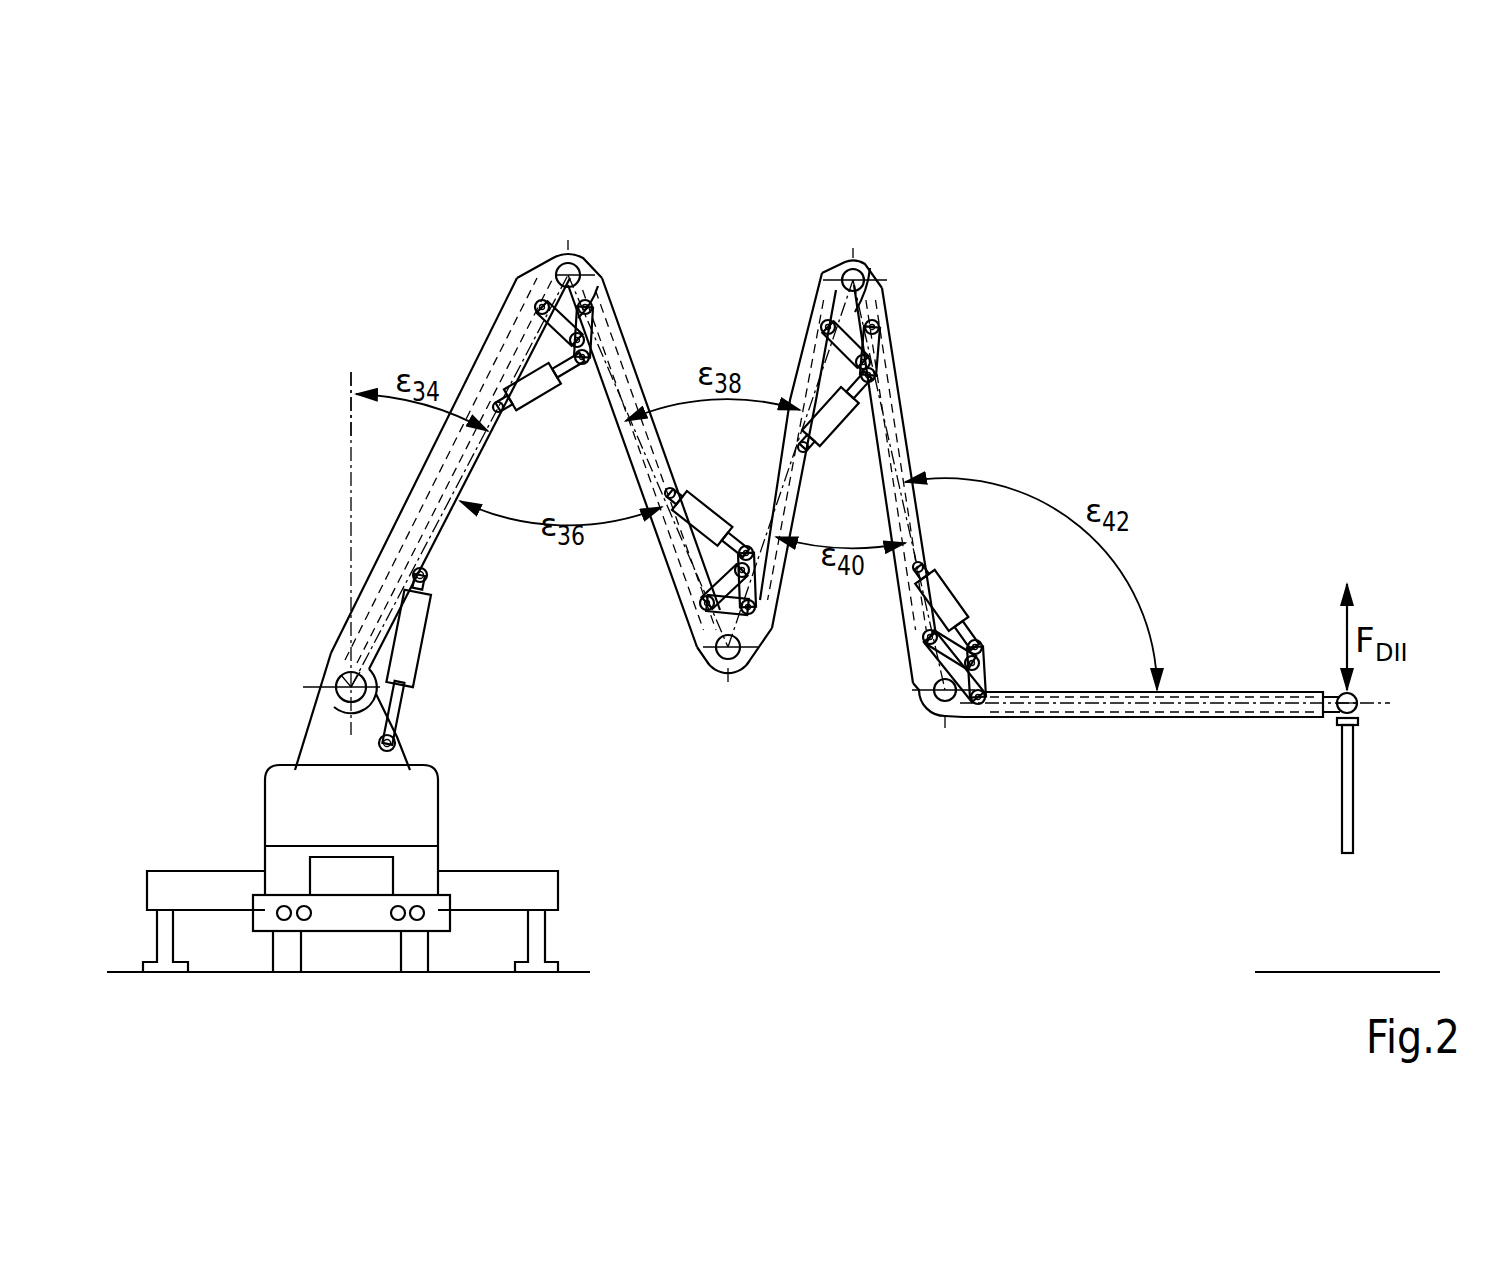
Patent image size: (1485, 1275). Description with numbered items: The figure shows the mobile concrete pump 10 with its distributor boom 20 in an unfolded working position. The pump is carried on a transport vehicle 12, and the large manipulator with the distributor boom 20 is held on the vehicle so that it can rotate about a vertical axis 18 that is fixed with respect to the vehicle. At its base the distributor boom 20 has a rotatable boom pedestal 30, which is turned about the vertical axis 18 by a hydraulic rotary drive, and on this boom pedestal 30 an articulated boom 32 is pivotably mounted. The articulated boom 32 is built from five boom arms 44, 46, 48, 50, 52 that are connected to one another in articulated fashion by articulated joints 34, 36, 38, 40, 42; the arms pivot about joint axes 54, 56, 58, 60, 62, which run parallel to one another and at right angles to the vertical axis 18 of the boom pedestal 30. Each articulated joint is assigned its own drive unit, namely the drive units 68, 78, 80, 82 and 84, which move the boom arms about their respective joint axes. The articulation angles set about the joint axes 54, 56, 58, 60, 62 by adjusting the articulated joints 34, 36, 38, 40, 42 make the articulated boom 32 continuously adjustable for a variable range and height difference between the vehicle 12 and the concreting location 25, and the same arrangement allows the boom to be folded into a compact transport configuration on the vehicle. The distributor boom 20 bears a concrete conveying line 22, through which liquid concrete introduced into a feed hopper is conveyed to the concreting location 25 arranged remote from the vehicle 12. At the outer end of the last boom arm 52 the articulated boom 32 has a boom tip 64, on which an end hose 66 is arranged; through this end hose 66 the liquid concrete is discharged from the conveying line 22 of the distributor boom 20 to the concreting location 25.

The mobile concrete pump 10 is at (325, 615).
The transport vehicle 12 is at (442, 792).
The vertical axis 18 is at (350, 376).
The distributor boom 20 is at (308, 720).
The concrete conveying line 22 is at (893, 420).
The concreting location 25 is at (1270, 972).
The boom pedestal 30 is at (325, 745).
The articulated boom 32 is at (904, 387).
The articulated joint 34 is at (318, 680).
The articulated joint 36 is at (540, 257).
The articulated joint 38 is at (708, 662).
The articulated joint 40 is at (825, 262).
The articulated joint 42 is at (924, 708).
The boom arm 44 is at (440, 558).
The boom arm 46 is at (668, 558).
The boom arm 48 is at (778, 614).
The boom arm 50 is at (900, 593).
The boom arm 52 is at (1030, 718).
The joint axis 54 is at (336, 665).
The joint axis 56 is at (576, 264).
The joint axis 58 is at (736, 664).
The joint axis 60 is at (862, 268).
The joint axis 62 is at (950, 712).
The boom tip 64 is at (1358, 712).
The end hose 66 is at (1353, 822).
The drive unit 68 is at (426, 640).
The drive unit 78 is at (566, 386).
The drive unit 80 is at (703, 505).
The drive unit 82 is at (844, 426).
The drive unit 84 is at (959, 602).